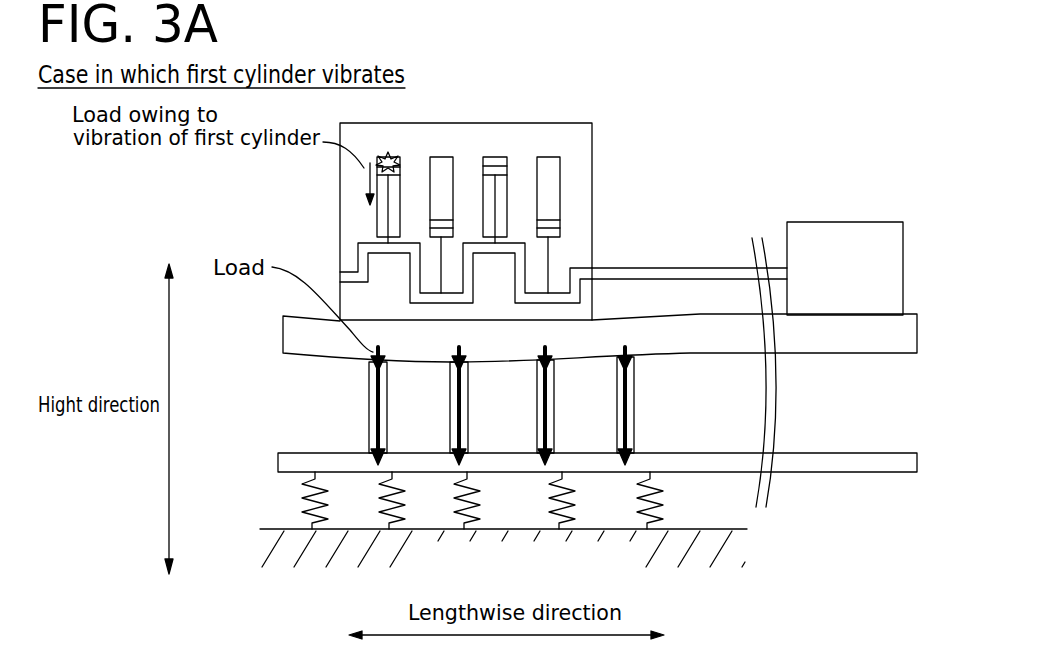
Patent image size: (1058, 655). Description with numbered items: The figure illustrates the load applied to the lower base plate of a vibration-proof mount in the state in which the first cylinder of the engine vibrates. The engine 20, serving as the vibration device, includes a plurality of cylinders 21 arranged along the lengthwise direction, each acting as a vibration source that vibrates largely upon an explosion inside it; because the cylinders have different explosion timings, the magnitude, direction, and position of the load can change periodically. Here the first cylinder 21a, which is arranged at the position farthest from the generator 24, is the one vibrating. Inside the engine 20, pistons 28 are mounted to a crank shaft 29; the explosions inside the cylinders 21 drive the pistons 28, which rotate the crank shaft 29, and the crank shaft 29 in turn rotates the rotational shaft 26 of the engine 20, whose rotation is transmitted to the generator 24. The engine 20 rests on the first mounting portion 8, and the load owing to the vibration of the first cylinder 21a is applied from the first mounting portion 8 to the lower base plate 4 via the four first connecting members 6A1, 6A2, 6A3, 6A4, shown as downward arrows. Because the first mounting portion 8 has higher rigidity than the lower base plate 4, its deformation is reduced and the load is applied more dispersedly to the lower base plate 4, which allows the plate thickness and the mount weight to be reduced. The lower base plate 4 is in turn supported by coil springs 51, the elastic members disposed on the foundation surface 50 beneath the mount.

The engine 20 is at (593, 152).
The cylinders 21 is at (560, 210).
The first cylinder 21a is at (377, 225).
The pistons 28 is at (560, 233).
The crank shaft 29 is at (357, 262).
The rotational shaft of the engine 26 is at (640, 268).
The generator 24 is at (823, 222).
The first mounting portion 8 is at (282, 337).
The lower base plate 4 is at (278, 455).
The coil springs 51 is at (302, 502).
The foundation surface 50 is at (747, 529).
The first connecting member 6A1 is at (367, 425).
The first connecting member 6A2 is at (450, 430).
The first connecting member 6A3 is at (537, 433).
The first connecting member 6A4 is at (615, 432).